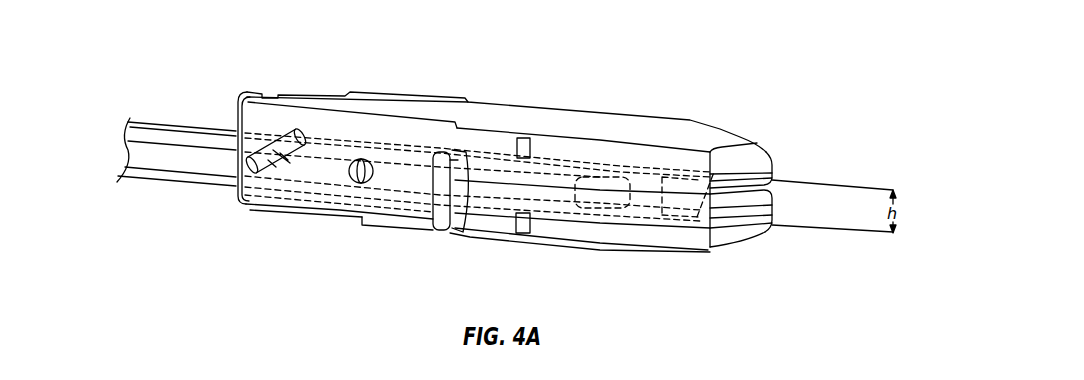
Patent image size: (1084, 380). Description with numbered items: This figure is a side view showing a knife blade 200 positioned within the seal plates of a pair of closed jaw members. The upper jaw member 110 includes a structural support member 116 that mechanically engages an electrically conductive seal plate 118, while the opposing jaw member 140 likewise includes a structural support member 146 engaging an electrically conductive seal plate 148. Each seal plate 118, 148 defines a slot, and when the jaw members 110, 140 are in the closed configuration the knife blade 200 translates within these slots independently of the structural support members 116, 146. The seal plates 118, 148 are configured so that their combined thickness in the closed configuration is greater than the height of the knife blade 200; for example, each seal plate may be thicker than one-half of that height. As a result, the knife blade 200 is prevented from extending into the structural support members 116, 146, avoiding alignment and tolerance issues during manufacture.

The knife blade 200 is at (172, 122).
The jaw member 110 is at (686, 111).
The structural support member 116 is at (765, 150).
The electrically conductive seal plate 118 is at (768, 176).
The electrically conductive seal plate 148 is at (765, 216).
The structural support member 146 is at (745, 240).
The jaw member 140 is at (637, 264).